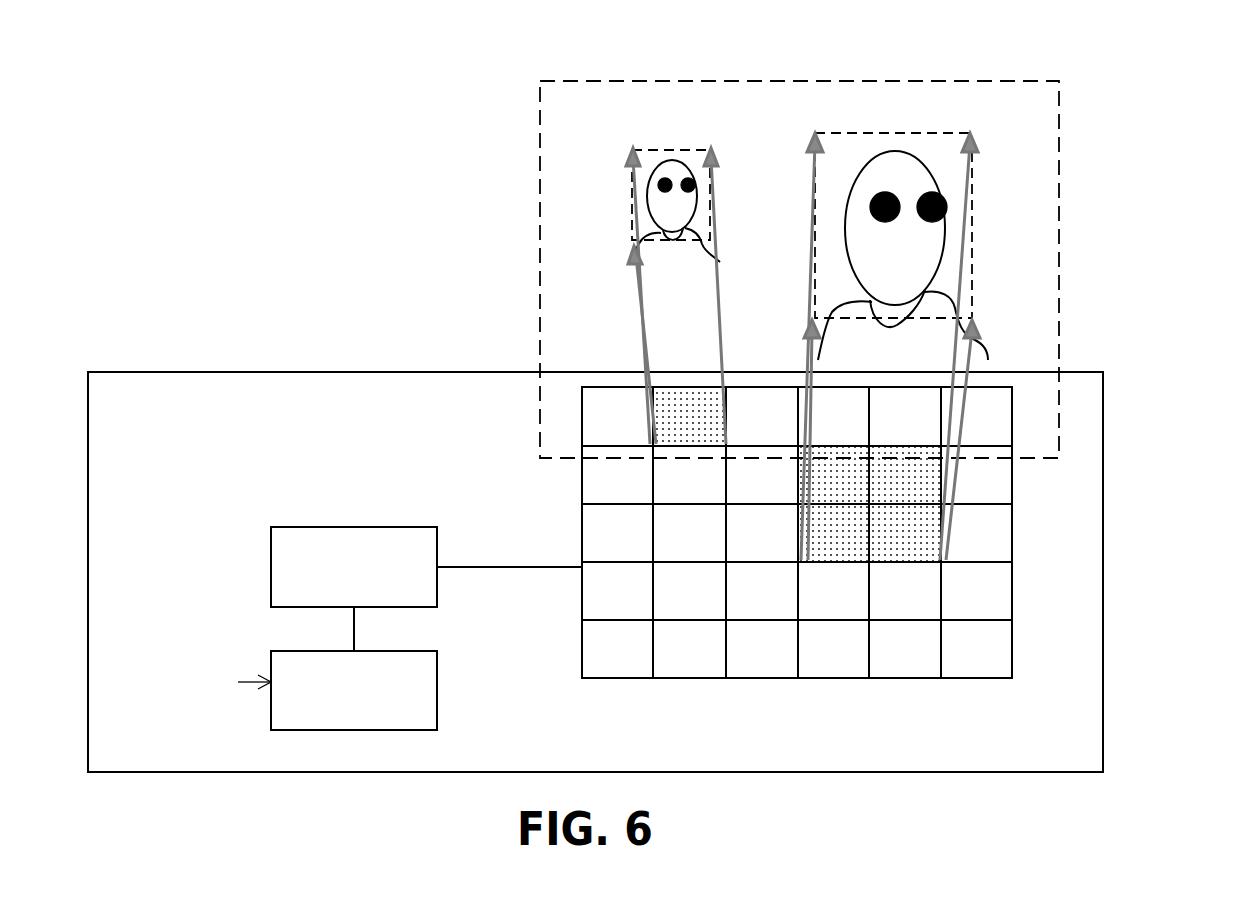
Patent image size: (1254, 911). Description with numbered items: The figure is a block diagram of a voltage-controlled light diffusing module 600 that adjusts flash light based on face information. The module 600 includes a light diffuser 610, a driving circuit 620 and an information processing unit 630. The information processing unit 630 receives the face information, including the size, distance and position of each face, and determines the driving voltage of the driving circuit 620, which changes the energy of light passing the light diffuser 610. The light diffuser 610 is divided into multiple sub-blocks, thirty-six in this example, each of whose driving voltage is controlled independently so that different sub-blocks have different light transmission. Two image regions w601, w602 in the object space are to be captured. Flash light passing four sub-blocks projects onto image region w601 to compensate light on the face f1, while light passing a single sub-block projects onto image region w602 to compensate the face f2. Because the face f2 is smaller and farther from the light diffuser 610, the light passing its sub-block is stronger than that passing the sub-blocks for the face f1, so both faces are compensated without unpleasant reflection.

The voltage-controlled light diffusing module 600 is at (1103, 705).
The light diffuser 610 is at (952, 678).
The driving circuit 620 is at (271, 548).
The information processing unit 630 is at (310, 730).
The image region w601 is at (962, 133).
The image region w602 is at (647, 148).
The face f1 is at (900, 163).
The face f2 is at (673, 167).